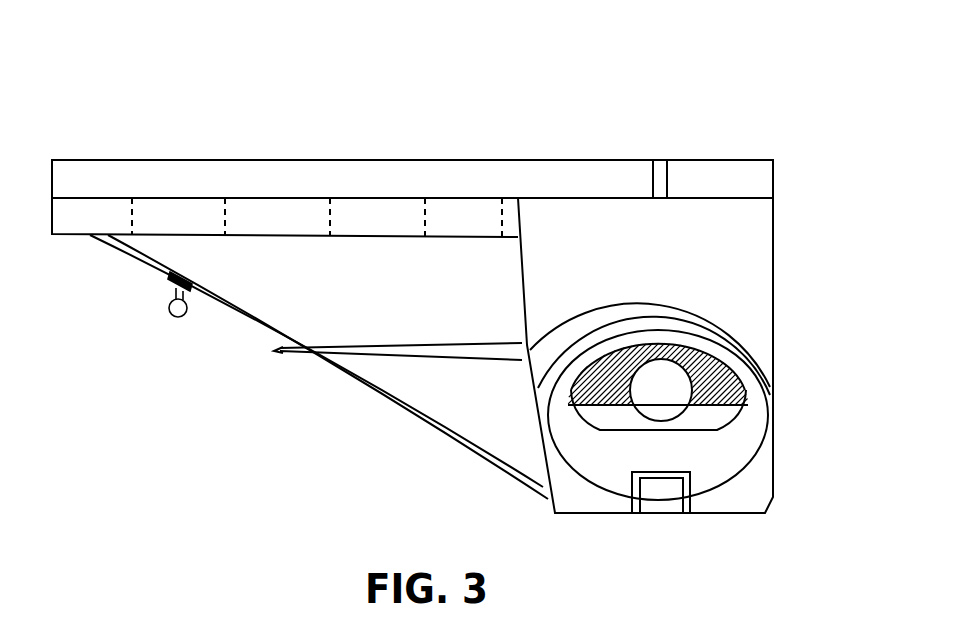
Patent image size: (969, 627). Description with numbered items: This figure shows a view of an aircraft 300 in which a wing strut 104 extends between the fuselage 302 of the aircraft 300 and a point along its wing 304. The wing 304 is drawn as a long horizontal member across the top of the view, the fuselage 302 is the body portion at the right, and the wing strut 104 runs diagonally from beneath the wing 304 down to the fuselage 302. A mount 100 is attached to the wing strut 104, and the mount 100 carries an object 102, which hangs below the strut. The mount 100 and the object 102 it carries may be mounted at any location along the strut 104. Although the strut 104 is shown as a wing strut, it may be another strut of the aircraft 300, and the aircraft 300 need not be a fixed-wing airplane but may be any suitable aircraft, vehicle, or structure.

The mount 100 is at (302, 367).
The object 102 is at (178, 317).
The wing strut 104 is at (350, 380).
The aircraft 300 is at (445, 293).
The fuselage 302 is at (747, 278).
The wing 304 is at (263, 168).